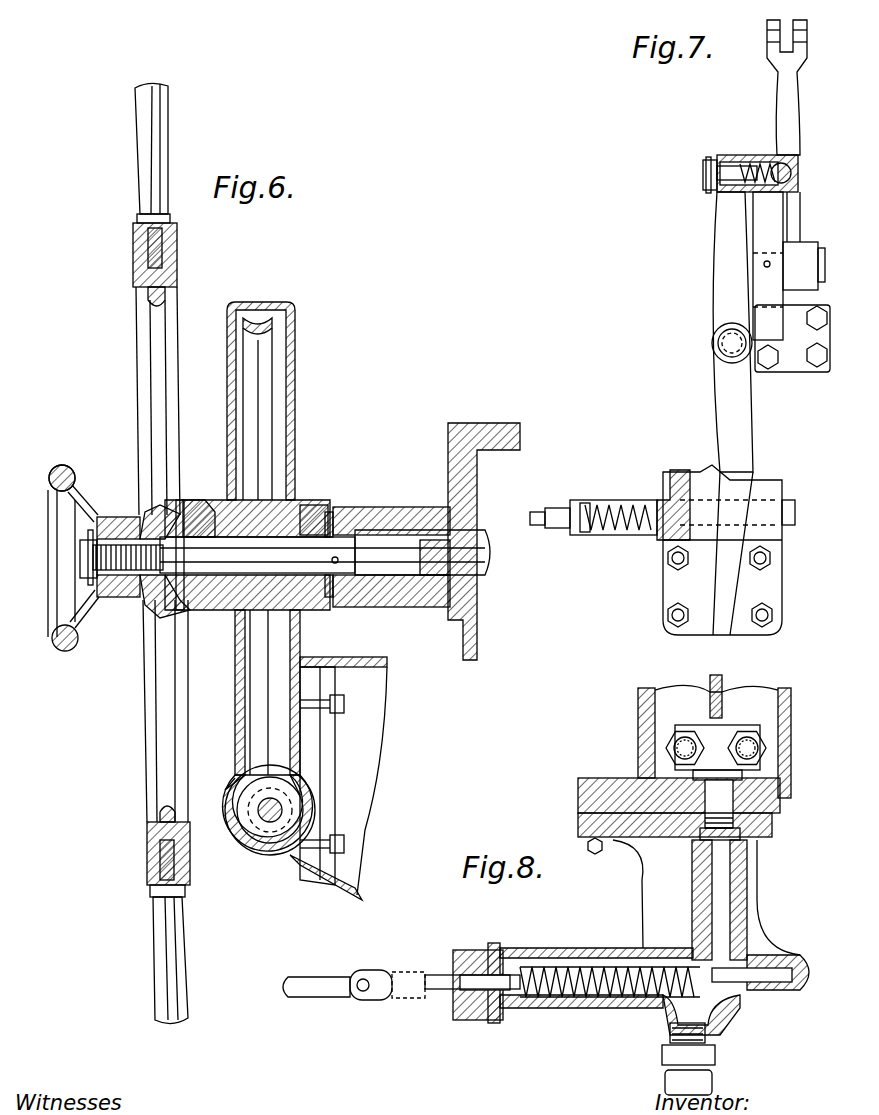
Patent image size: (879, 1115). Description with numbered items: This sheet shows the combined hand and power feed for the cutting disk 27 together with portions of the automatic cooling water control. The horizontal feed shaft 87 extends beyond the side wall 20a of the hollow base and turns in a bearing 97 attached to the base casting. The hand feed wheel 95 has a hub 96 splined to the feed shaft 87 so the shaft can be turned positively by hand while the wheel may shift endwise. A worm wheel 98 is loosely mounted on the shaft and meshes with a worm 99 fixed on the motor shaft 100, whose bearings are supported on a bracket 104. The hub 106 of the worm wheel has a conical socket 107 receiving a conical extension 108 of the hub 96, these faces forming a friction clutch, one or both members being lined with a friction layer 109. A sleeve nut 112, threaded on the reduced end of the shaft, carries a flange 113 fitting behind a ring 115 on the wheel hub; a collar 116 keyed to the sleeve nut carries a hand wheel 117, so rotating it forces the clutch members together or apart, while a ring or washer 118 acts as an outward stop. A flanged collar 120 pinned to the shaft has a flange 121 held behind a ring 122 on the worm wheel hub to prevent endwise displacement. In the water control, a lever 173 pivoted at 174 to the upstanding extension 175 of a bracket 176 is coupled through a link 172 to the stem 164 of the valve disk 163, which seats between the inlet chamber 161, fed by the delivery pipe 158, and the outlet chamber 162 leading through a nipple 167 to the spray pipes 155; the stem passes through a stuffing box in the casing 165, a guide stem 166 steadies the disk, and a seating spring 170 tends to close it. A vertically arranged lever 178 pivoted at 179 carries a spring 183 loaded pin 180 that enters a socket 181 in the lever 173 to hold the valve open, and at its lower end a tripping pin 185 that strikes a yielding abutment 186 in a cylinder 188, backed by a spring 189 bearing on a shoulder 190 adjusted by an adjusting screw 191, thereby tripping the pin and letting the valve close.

In FIG. 6, the hand feed wheel 95 is at (150, 455).
In FIG. 6, the collar 116 is at (98, 520).
In FIG. 6, the hand wheel 117 is at (58, 650).
In FIG. 6, the ring 115 is at (140, 517).
In FIG. 6, the ring or washer 118 is at (88, 560).
In FIG. 6, the sleeve nut 112 is at (130, 585).
In FIG. 6, the conical extension 108 is at (158, 612).
In FIG. 6, the hub 96 is at (180, 520).
In FIG. 6, the friction layer 109 is at (205, 500).
In FIG. 6, the flange 113 is at (180, 500).
In FIG. 6, the feed shaft 87 is at (480, 545).
In FIG. 6, the hub 106 is at (295, 480).
In FIG. 6, the worm wheel 98 is at (262, 440).
In FIG. 6, the flange 121 is at (300, 505).
In FIG. 6, the ring 122 is at (330, 512).
In FIG. 6, the flanged collar 120 is at (360, 510).
In FIG. 6, the bearing 97 is at (400, 595).
In FIG. 6, the side wall 20a is at (477, 640).
In FIG. 6, the conical socket 107 is at (238, 612).
In FIG. 6, the worm 99 is at (258, 830).
In FIG. 6, the shaft 100 is at (320, 806).
In FIG. 6, the bracket 104 is at (375, 657).
In FIG. 7, the lever 173 is at (785, 110).
In FIG. 7, the pin 180 is at (735, 172).
In FIG. 7, the spring 183 is at (730, 162).
In FIG. 7, the socket 181 is at (790, 165).
In FIG. 7, the pivot 174 is at (820, 248).
In FIG. 7, the upstanding extension 175 is at (760, 235).
In FIG. 7, the vertically arranged lever 178 is at (718, 303).
In FIG. 7, the pivot 179 is at (730, 345).
In FIG. 7, the bracket 176 is at (800, 362).
In FIG. 7, the cutting disk 27 is at (722, 635).
In FIG. 8, the cutting disk 27 is at (716, 675).
In FIG. 7, the tripping pin 185 is at (790, 525).
In FIG. 7, the abutment 186 is at (665, 545).
In FIG. 7, the cylinder 188 is at (612, 500).
In FIG. 7, the spring 189 is at (606, 532).
In FIG. 7, the shoulder 190 is at (585, 503).
In FIG. 7, the adjusting screw 191 is at (548, 528).
In FIG. 8, the nipple 167 is at (785, 785).
In FIG. 8, the spray pipes 155 is at (685, 727).
In FIG. 8, the outlet chamber 162 is at (722, 888).
In FIG. 8, the valve disk 163 is at (692, 945).
In FIG. 8, the casing 165 is at (578, 948).
In FIG. 8, the seating spring 170 is at (590, 965).
In FIG. 8, the inlet chamber 161 is at (612, 1000).
In FIG. 8, the stem 164 is at (445, 990).
In FIG. 8, the link 172 is at (296, 1000).
In FIG. 8, the guide stem 166 is at (780, 985).
In FIG. 8, the delivery pipe 158 is at (665, 1082).